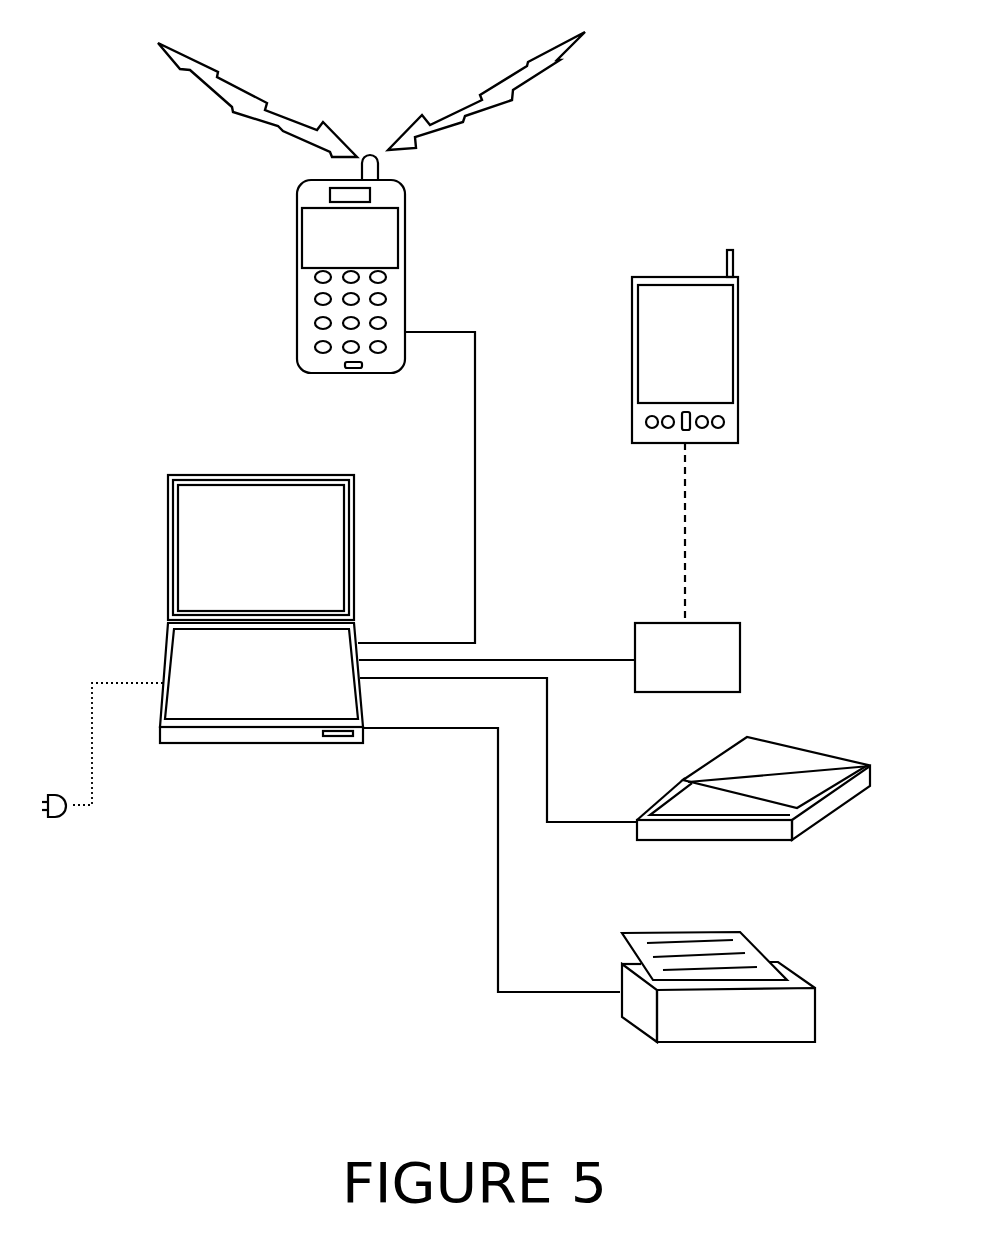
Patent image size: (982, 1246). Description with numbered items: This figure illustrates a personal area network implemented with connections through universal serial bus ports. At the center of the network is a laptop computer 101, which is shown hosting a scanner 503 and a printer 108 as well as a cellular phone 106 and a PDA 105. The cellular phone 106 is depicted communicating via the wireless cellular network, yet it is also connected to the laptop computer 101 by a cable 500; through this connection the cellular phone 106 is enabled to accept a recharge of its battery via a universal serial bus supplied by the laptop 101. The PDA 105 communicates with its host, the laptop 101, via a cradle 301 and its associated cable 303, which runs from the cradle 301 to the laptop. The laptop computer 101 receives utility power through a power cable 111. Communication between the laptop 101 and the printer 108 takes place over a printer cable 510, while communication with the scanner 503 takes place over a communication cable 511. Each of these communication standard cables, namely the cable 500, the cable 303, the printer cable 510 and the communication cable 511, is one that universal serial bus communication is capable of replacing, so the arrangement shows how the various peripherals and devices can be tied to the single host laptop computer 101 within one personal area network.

The laptop computer 101 is at (275, 560).
The PDA 105 is at (700, 371).
The cellular phone 106 is at (363, 261).
The printer 108 is at (750, 1028).
The power cable 111 is at (73, 808).
The cradle 301 is at (703, 668).
The cable 303 is at (582, 660).
The cable 500 is at (438, 326).
The scanner 503 is at (740, 840).
The printer cable 510 is at (498, 780).
The communication cable 511 is at (567, 822).